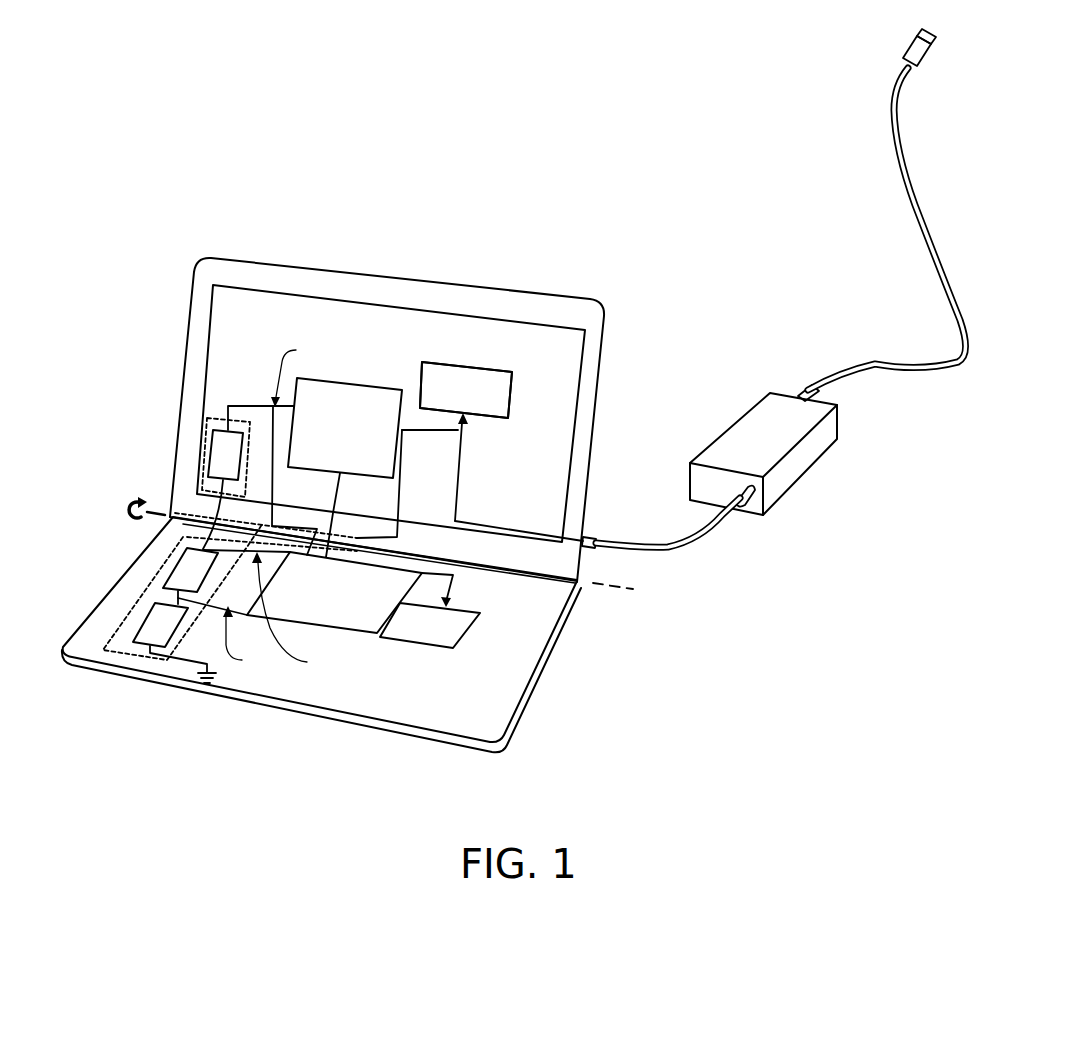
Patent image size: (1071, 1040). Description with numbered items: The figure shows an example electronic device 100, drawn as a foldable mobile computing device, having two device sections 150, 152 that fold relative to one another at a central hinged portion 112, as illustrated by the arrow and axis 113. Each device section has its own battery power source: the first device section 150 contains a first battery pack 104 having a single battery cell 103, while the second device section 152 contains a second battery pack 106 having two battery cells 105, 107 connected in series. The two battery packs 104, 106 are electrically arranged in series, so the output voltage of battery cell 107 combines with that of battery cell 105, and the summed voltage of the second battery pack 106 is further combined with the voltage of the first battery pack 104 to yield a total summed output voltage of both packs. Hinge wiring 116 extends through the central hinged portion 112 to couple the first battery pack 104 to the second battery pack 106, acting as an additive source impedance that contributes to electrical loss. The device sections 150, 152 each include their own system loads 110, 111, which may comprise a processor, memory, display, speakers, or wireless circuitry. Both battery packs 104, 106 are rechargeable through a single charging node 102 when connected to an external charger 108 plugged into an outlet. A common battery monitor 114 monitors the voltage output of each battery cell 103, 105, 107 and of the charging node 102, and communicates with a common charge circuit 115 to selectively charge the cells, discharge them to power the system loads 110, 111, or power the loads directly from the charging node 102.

The electronic device 100 is at (315, 225).
The charging node 102 is at (596, 547).
The battery cell 103 is at (212, 441).
The first battery pack 104 is at (221, 416).
The battery cell 105 is at (168, 578).
The second battery pack 106 is at (124, 657).
The battery cell 107 is at (144, 620).
The charger 108 is at (791, 447).
The system load 110 is at (477, 417).
The system load 111 is at (393, 640).
The central hinged portion 112 is at (577, 585).
The arrow and axis 113 is at (150, 493).
The battery monitor 114 is at (459, 578).
The charge circuit 115 is at (381, 383).
The hinge wiring 116 is at (354, 540).
The device section 150 is at (588, 470).
The device section 152 is at (526, 702).